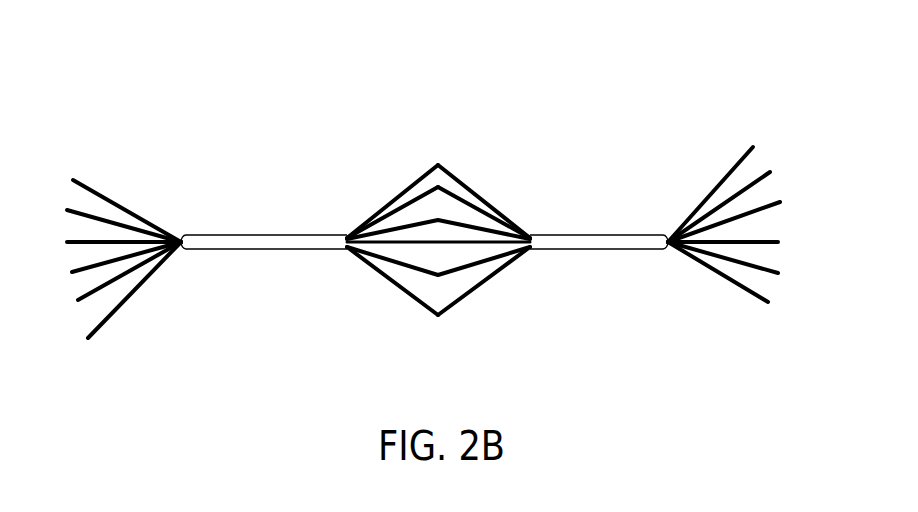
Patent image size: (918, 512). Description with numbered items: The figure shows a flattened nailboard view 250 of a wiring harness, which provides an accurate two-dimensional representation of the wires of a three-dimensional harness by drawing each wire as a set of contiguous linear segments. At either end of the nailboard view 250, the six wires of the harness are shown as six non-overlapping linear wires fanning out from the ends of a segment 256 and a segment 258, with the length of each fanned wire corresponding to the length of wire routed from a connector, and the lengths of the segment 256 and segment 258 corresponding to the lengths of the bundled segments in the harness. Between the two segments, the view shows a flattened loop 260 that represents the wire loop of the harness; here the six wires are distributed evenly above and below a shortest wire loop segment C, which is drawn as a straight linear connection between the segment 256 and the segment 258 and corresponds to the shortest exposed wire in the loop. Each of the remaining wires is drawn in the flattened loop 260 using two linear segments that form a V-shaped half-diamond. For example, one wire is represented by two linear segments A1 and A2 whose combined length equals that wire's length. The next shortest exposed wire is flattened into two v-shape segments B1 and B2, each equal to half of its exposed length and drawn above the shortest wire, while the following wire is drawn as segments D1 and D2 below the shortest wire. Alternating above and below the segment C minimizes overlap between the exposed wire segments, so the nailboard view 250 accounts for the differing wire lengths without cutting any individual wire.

The flattened nailboard view 250 is at (522, 98).
The segment 256 is at (223, 253).
The segment 258 is at (598, 253).
The flattened loop 260 is at (392, 159).
The linear segment A1 is at (390, 212).
The linear segment A2 is at (490, 202).
The v-shape segment B1 is at (382, 204).
The v-shape segment B2 is at (470, 200).
The shortest wire loop segment C is at (425, 245).
The v-shape segment D1 is at (378, 263).
The v-shape segment D2 is at (480, 263).